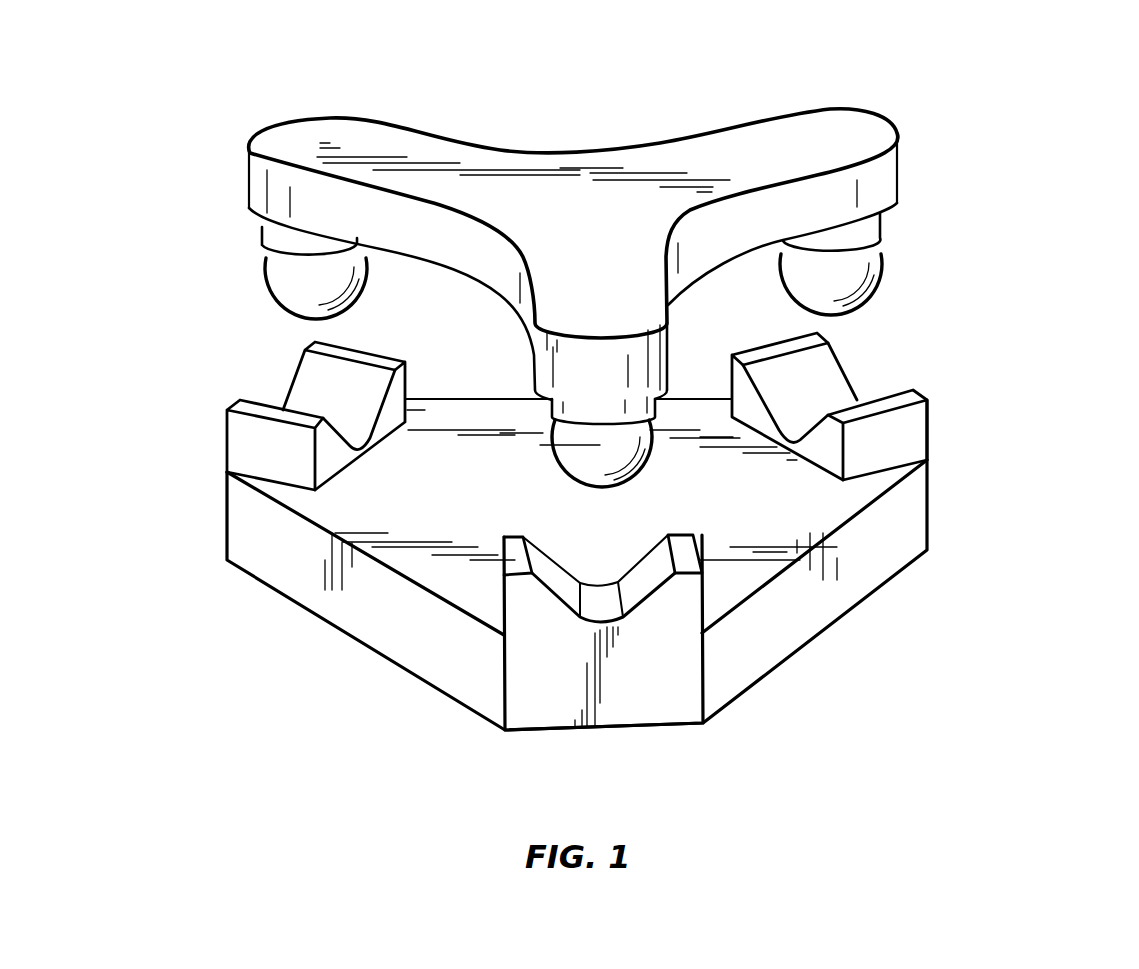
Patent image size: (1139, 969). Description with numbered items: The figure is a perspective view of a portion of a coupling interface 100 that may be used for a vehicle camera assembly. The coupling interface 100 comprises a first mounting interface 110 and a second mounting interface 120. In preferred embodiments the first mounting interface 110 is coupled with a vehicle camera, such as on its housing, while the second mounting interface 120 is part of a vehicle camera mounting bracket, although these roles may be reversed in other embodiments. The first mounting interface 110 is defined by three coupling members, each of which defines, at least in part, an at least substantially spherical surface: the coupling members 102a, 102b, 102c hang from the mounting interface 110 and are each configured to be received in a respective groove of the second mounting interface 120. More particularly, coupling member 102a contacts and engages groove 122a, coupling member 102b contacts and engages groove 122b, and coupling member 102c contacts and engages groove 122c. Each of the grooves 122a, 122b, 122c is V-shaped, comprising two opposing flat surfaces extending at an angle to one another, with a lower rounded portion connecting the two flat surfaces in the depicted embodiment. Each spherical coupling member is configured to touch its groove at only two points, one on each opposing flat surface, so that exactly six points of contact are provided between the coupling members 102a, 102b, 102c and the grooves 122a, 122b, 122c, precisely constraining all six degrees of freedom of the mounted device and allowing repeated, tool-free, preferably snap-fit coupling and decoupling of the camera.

The coupling interface 100 is at (920, 102).
The first mounting interface 110 is at (920, 202).
The coupling member 102a is at (880, 280).
The coupling member 102b is at (288, 272).
The coupling member 102c is at (618, 457).
The second mounting interface 120 is at (945, 482).
The groove 122a is at (857, 382).
The groove 122b is at (277, 388).
The groove 122c is at (633, 588).